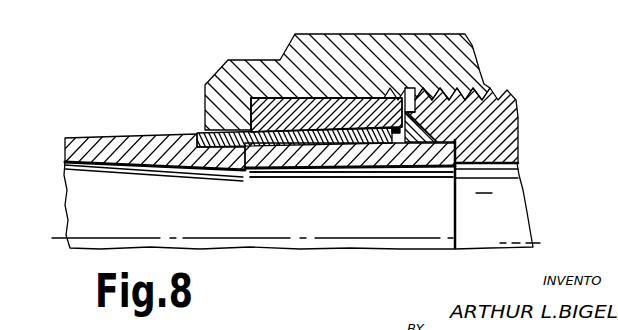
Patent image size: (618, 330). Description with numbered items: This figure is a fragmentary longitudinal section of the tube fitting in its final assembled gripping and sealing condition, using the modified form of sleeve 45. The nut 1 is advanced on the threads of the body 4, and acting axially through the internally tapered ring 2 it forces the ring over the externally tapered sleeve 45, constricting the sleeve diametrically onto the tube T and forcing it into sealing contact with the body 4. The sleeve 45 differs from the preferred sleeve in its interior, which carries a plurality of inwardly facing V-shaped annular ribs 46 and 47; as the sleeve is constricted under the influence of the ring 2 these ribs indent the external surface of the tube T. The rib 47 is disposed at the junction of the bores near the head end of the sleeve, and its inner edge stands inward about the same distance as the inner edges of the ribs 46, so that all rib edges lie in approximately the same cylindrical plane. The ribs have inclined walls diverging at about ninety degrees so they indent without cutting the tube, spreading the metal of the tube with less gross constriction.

The nut 1 is at (218, 70).
The ring 2 is at (340, 113).
The body 4 is at (512, 128).
The tube T is at (116, 140).
The sleeve 45 is at (298, 143).
The ribs 46 is at (250, 143).
The rib 47 is at (383, 143).